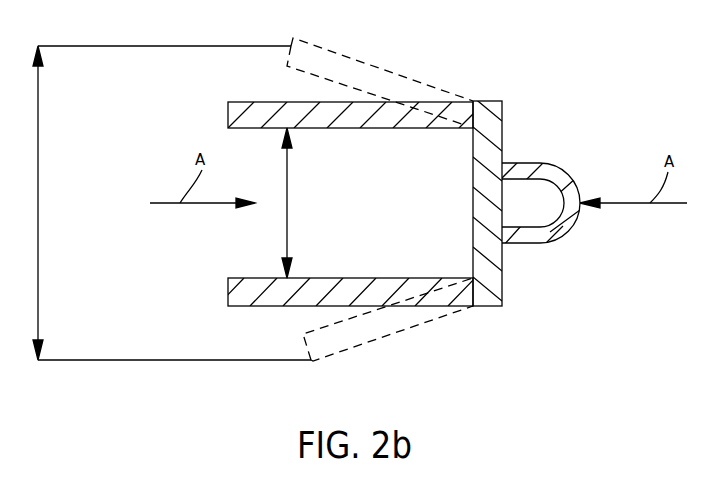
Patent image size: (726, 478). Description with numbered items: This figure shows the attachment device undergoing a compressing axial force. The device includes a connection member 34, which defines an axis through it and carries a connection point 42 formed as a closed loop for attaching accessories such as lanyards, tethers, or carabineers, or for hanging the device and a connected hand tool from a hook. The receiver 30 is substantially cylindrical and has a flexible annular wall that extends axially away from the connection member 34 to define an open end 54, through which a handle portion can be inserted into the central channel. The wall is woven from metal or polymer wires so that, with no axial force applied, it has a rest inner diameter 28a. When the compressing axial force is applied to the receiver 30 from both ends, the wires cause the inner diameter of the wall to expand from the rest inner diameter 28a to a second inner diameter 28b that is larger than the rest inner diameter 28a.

The receiver 30 is at (330, 112).
The open end 54 is at (227, 110).
The connection member 34 is at (485, 112).
The connection point 42 is at (525, 175).
The second inner diameter 28b is at (38, 183).
The rest inner diameter 28a is at (287, 183).